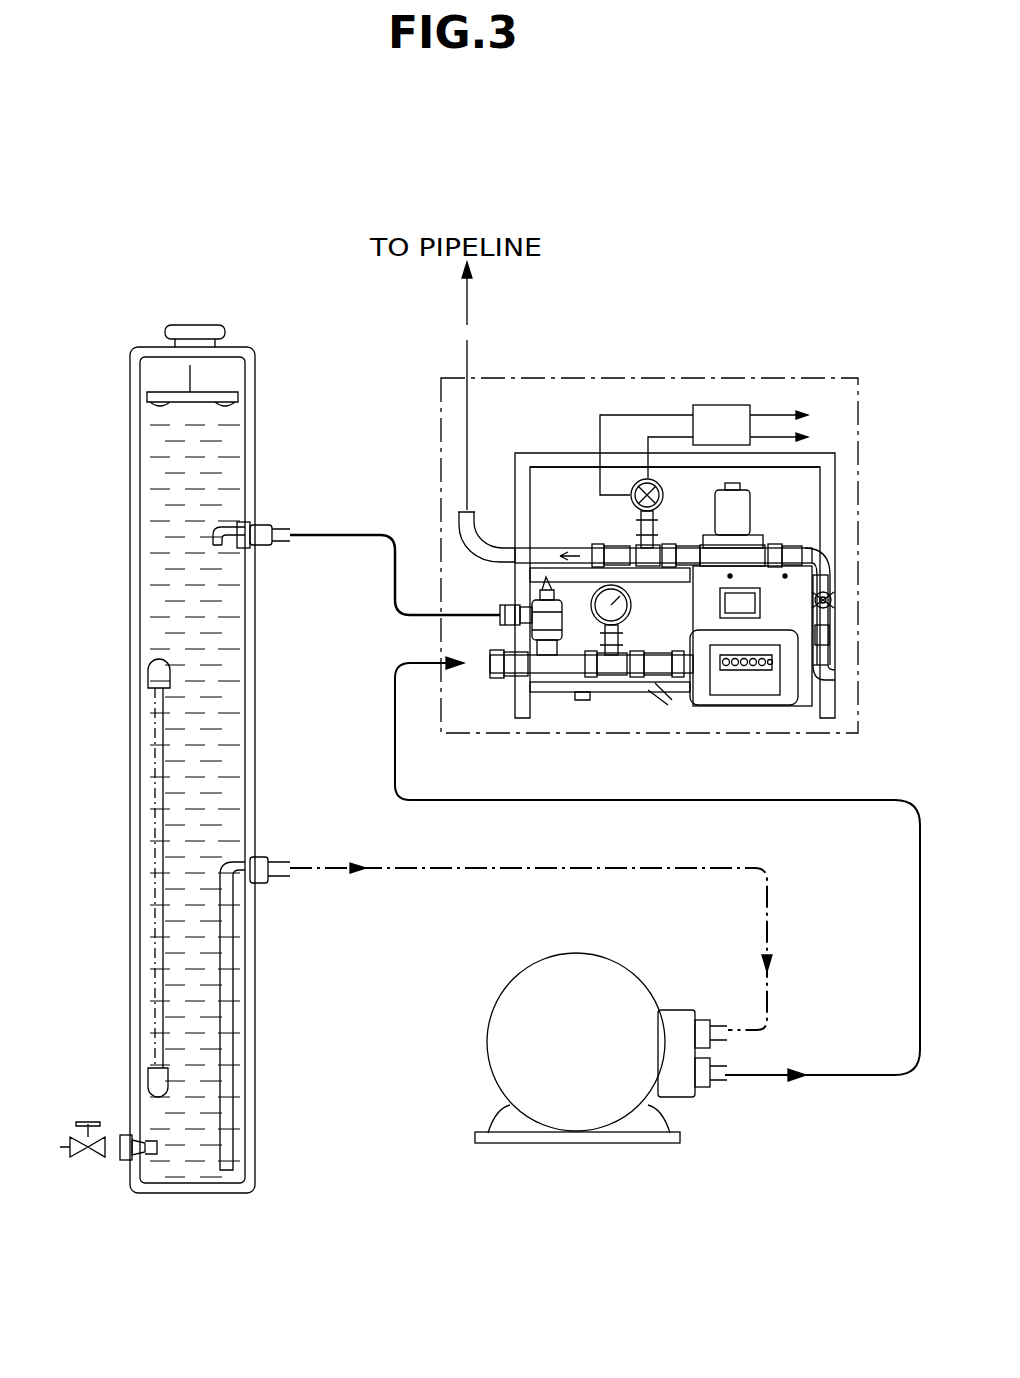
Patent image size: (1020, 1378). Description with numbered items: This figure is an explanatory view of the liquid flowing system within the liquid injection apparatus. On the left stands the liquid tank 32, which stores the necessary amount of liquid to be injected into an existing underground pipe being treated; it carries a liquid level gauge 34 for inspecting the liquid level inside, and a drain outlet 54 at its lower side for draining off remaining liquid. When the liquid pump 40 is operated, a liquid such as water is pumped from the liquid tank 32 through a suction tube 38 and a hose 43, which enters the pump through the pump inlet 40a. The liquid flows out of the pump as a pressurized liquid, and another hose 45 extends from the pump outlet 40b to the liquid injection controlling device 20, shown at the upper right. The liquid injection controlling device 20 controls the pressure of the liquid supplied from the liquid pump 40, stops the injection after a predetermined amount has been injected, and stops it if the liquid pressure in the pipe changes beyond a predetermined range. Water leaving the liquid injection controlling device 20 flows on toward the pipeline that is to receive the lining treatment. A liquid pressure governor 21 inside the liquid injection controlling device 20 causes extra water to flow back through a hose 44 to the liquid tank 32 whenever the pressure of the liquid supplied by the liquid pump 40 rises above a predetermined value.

The liquid injection controlling device 20 is at (550, 378).
The liquid pressure governor 21 is at (545, 620).
The liquid tank 32 is at (253, 437).
The liquid level gauge 34 is at (160, 730).
The suction tube 38 is at (229, 1175).
The liquid pump 40 is at (583, 1112).
The pump inlet 40a is at (722, 1035).
The pump outlet 40b is at (725, 1080).
The hose 43 is at (512, 870).
The hose 44 is at (362, 535).
The hose 45 is at (920, 912).
The drain outlet 54 is at (85, 1155).